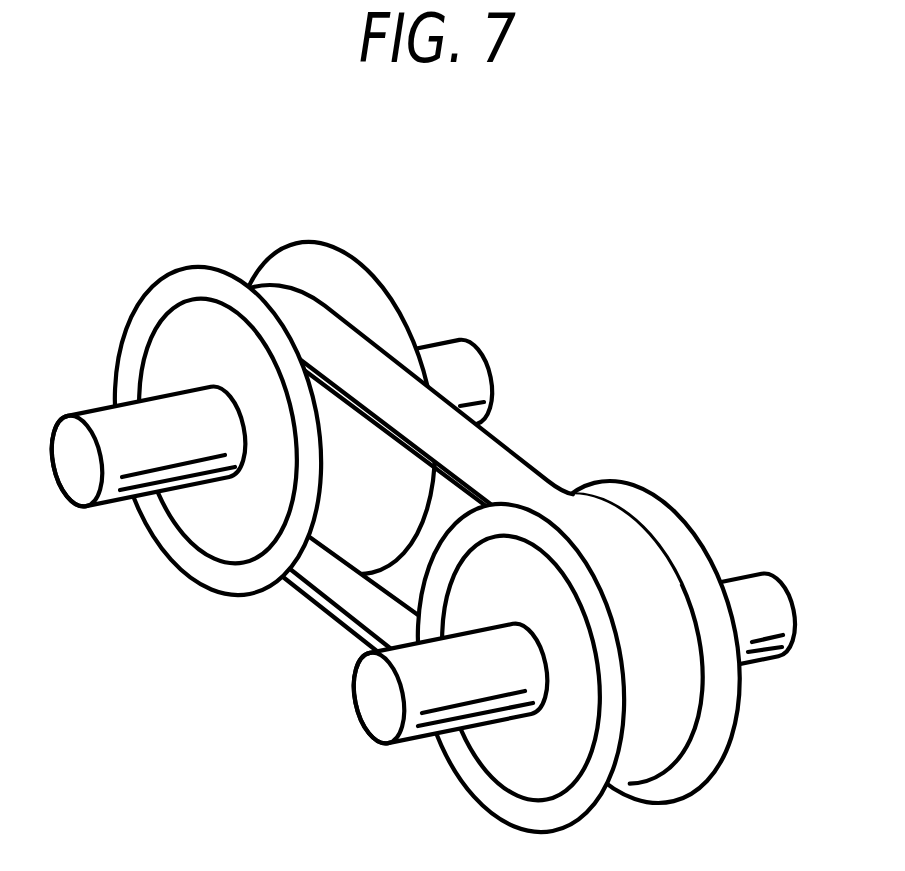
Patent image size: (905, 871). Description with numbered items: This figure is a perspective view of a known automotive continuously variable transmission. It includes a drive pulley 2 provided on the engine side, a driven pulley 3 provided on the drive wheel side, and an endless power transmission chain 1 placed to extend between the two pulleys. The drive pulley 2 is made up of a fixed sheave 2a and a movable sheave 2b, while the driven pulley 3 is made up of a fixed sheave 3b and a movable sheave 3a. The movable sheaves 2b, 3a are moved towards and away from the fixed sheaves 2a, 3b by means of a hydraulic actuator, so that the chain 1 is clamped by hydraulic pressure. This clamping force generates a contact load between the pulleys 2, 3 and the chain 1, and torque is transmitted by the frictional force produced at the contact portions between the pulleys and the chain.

The endless power transmission chain 1 is at (508, 446).
The drive pulley 2 is at (652, 629).
The fixed sheave 2a is at (660, 513).
The movable sheave 2b is at (498, 750).
The driven pulley 3 is at (347, 386).
The movable sheave 3a is at (322, 248).
The fixed sheave 3b is at (203, 527).